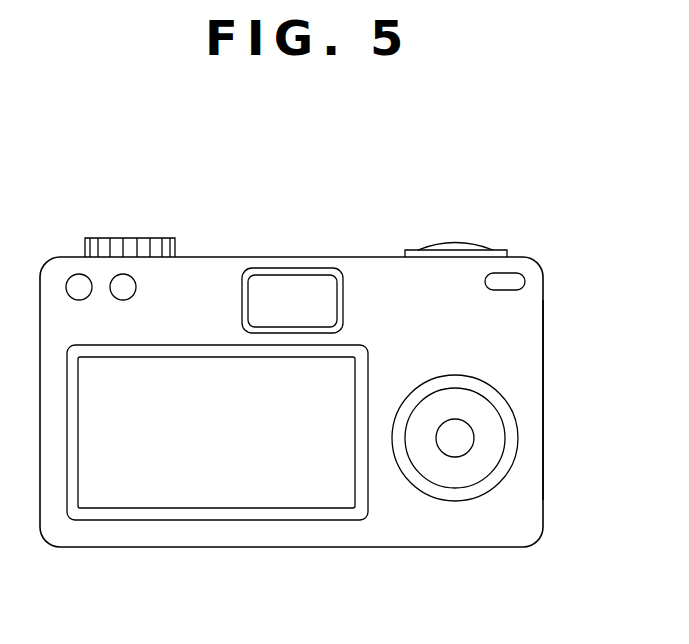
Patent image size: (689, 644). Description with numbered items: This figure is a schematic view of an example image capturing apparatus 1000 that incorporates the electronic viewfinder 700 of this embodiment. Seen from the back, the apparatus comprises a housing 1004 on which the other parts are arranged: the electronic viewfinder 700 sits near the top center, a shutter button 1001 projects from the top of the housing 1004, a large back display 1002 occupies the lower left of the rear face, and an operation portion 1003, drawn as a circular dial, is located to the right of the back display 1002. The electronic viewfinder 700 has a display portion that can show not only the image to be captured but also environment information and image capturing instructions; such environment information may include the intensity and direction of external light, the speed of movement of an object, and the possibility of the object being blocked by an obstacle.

The image capturing apparatus 1000 is at (196, 225).
The shutter button 1001 is at (455, 243).
The electronic viewfinder 700 is at (293, 288).
The back display 1002 is at (210, 495).
The operation portion 1003 is at (495, 437).
The housing 1004 is at (532, 343).